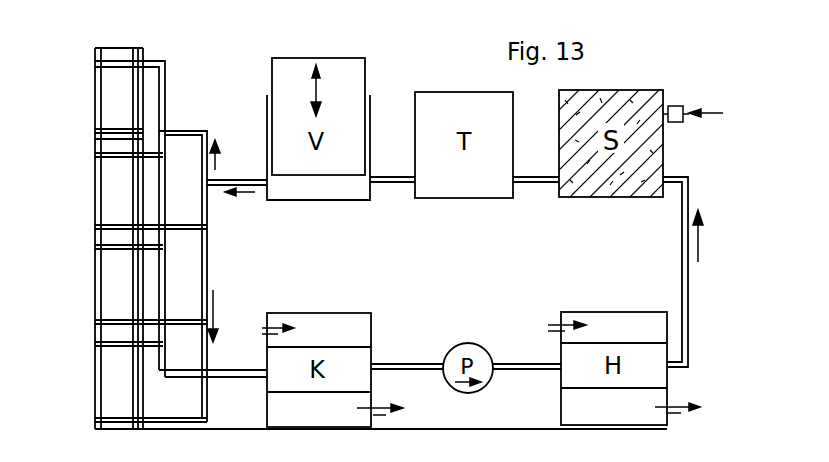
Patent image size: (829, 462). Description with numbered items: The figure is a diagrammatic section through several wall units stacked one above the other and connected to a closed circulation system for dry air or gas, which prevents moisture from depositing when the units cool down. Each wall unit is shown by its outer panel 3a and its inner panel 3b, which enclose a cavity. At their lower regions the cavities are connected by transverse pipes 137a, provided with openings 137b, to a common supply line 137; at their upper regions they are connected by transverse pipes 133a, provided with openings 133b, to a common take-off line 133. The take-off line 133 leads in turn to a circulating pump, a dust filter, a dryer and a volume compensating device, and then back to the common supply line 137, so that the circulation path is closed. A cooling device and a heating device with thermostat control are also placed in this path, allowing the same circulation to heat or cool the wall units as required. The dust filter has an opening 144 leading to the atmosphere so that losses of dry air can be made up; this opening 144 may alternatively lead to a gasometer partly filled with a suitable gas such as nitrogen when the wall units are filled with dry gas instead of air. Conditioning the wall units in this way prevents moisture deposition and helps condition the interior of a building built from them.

The common take-off line 133 is at (166, 79).
The transverse pipe 133a is at (116, 66).
The opening 133b is at (135, 347).
The common supply line 137 is at (175, 128).
The transverse pipe 137a is at (112, 135).
The opening 137b is at (136, 128).
The outer panel 3a is at (95, 193).
The inner panel 3b is at (104, 238).
The opening 144 is at (694, 129).